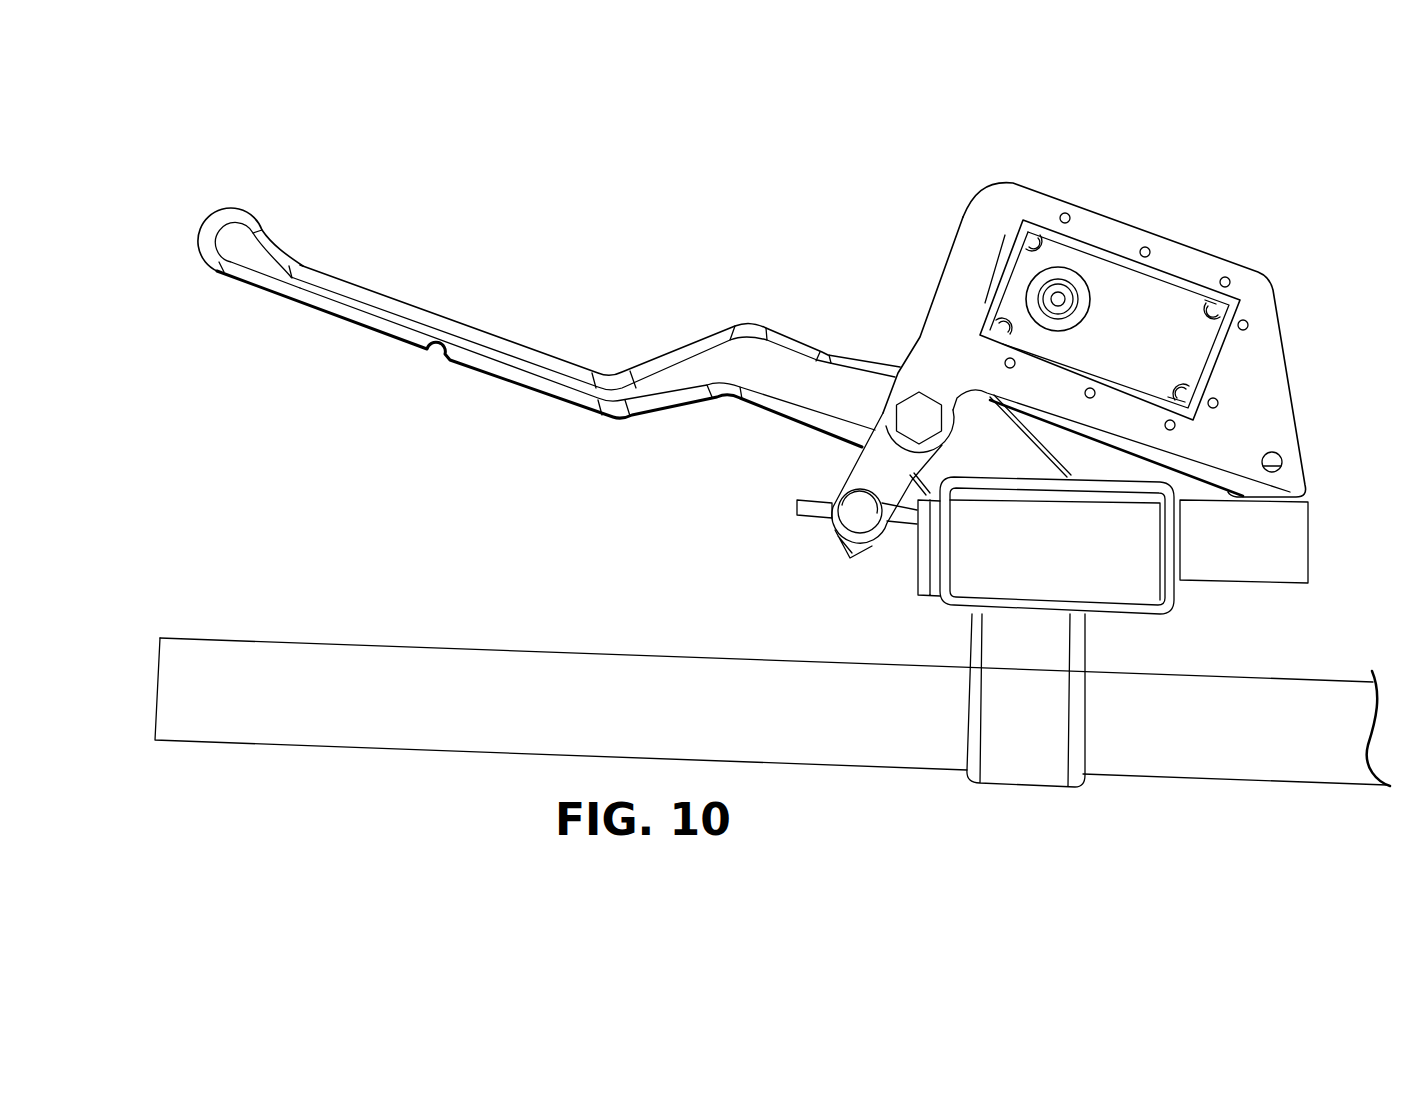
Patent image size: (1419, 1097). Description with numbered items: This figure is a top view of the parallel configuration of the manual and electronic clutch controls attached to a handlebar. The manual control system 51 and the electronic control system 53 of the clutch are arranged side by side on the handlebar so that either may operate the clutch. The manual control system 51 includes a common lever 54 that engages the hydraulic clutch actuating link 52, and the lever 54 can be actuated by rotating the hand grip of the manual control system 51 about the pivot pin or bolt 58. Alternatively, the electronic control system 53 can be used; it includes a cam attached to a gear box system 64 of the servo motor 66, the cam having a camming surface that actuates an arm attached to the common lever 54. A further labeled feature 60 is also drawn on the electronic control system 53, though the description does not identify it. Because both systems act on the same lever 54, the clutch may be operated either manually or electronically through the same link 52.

The manual control system 51 is at (560, 420).
The hydraulic clutch actuating link 52 is at (795, 506).
The electronic control system 53 is at (1233, 263).
The common lever 54 is at (840, 545).
The pivot pin or bolt 58 is at (520, 367).
The recess 60 is at (1180, 355).
The gear box system 64 is at (1077, 285).
The servo motor 66 is at (1125, 305).